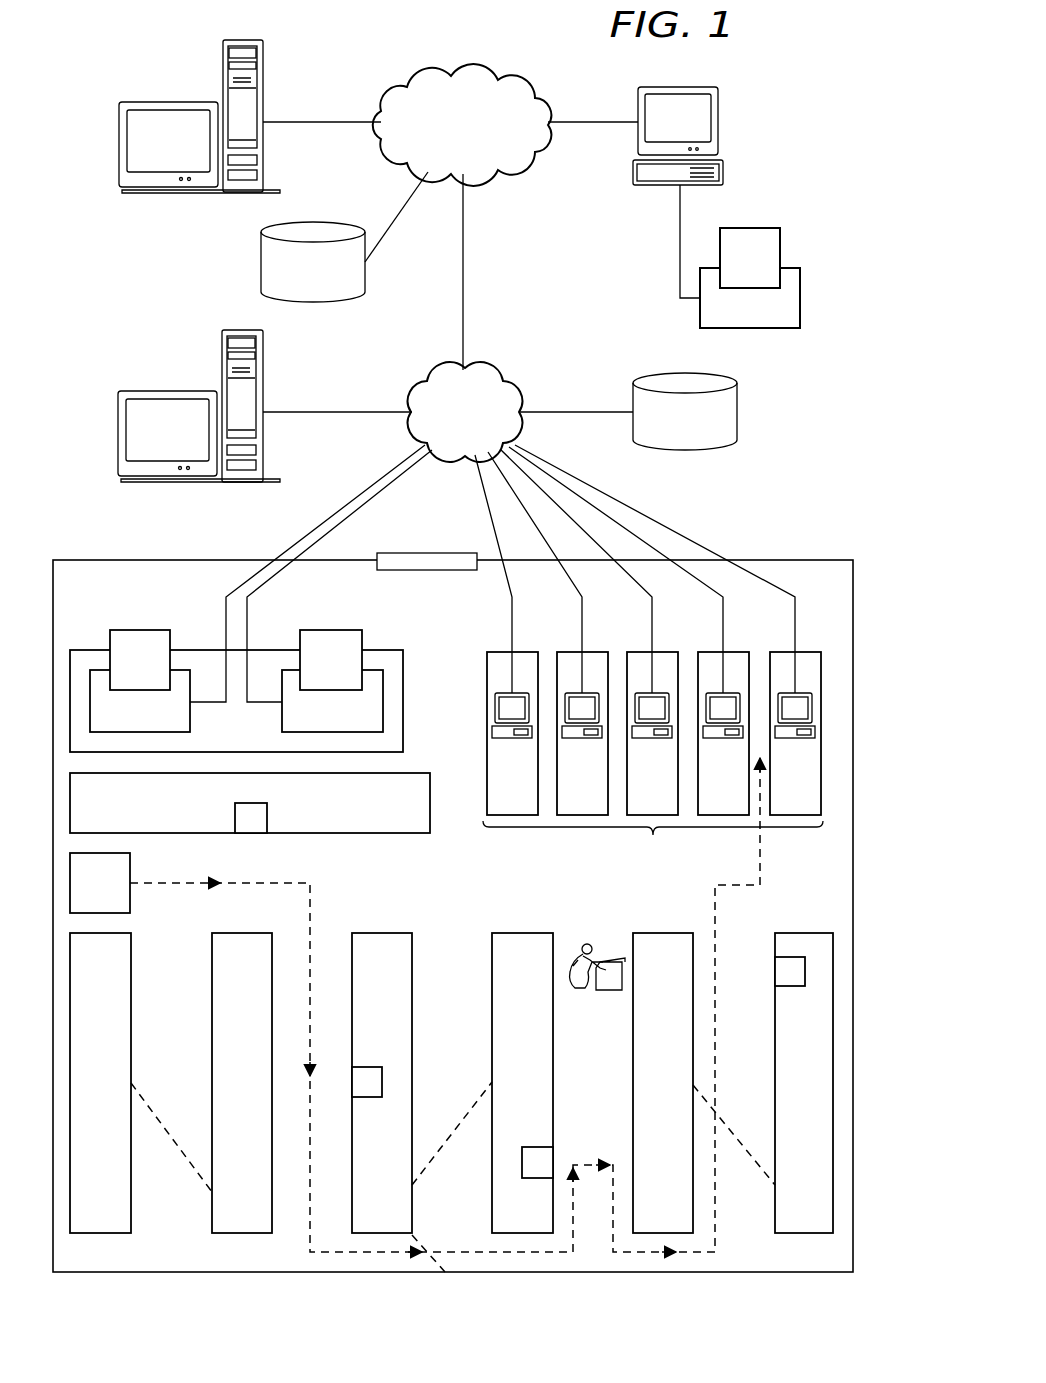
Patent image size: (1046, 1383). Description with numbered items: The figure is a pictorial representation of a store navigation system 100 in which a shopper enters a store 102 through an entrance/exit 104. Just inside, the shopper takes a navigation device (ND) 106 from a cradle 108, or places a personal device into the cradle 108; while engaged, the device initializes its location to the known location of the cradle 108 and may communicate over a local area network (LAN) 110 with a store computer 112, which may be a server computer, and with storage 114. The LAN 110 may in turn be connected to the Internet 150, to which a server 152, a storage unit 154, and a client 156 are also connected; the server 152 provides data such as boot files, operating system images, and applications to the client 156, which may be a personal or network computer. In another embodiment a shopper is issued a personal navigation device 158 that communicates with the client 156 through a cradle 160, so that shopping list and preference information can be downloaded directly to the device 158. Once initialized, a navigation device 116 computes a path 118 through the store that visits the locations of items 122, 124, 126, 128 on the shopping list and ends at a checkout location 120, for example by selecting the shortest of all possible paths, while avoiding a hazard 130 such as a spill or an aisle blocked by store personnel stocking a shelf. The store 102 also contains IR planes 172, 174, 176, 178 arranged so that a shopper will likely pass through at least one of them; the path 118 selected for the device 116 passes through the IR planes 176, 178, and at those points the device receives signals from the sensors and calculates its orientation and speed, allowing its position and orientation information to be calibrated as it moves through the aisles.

The navigation system 100 is at (770, 153).
The store 102 is at (795, 560).
The entrance/exit 104 is at (430, 553).
The navigation device 106 is at (122, 630).
The cradle 108 is at (190, 712).
The local area network 110 is at (446, 432).
The store computer 112 is at (222, 350).
The storage 114 is at (737, 412).
The navigation device 116 is at (130, 896).
The path 118 is at (312, 908).
The checkout location 120 is at (653, 770).
The item 122 is at (235, 818).
The item 124 is at (366, 1067).
The item 126 is at (534, 1147).
The item 128 is at (790, 986).
The hazard 130 is at (588, 944).
The Internet 150 is at (444, 154).
The server 152 is at (222, 60).
The storage unit 154 is at (261, 262).
The client 156 is at (638, 105).
The personal navigation device 158 is at (780, 250).
The cradle 160 is at (800, 299).
The IR plane 172 is at (166, 1130).
The IR plane 174 is at (456, 1130).
The IR plane 176 is at (425, 1247).
The IR plane 178 is at (731, 1126).